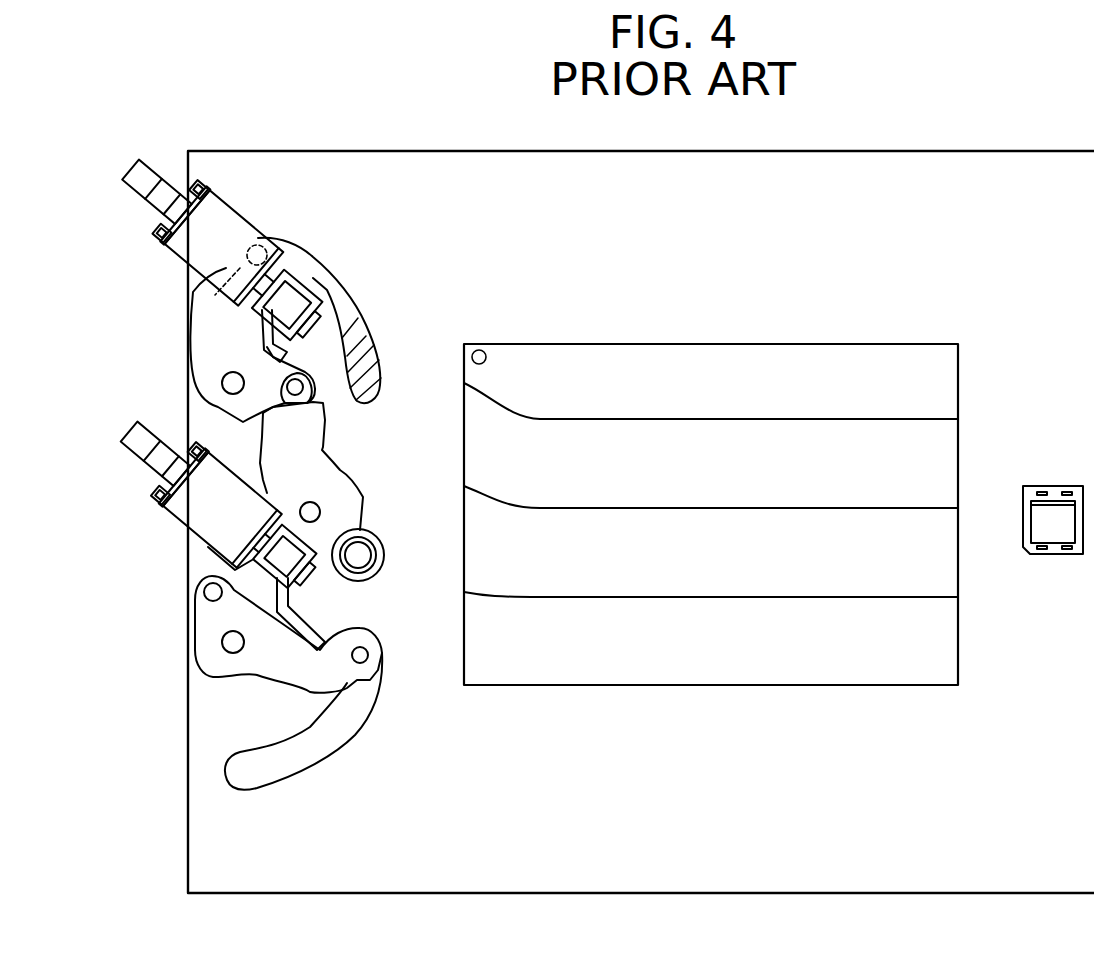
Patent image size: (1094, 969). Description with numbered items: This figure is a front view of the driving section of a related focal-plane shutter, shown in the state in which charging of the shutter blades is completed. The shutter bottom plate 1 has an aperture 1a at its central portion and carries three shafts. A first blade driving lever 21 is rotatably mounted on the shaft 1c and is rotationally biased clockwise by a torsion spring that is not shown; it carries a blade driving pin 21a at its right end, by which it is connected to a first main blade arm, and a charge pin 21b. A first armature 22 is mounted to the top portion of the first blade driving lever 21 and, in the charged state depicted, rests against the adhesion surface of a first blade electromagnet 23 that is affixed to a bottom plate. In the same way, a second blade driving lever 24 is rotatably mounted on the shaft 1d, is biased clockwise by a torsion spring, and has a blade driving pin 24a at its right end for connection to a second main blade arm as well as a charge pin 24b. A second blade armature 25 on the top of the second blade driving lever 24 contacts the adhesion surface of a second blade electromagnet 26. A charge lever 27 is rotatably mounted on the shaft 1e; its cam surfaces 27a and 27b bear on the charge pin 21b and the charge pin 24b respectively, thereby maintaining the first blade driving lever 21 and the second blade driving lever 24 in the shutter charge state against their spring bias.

The shutter bottom plate 1 is at (983, 160).
The aperture 1a is at (808, 686).
The shaft 1c is at (233, 653).
The shaft 1d is at (233, 394).
The shaft 1e is at (314, 510).
The first blade driving lever 21 is at (280, 672).
The blade driving pin 21a is at (368, 655).
The charge pin 21b is at (206, 630).
The first armature 22 is at (312, 576).
The first blade electromagnet 23 is at (197, 513).
The second blade driving lever 24 is at (213, 358).
The blade driving pin 24a is at (262, 246).
The charge pin 24b is at (297, 380).
The second blade armature 25 is at (313, 260).
The second blade electromagnet 26 is at (187, 252).
The charge lever 27 is at (343, 463).
The cam surface 27a is at (212, 572).
The cam surface 27b is at (320, 397).